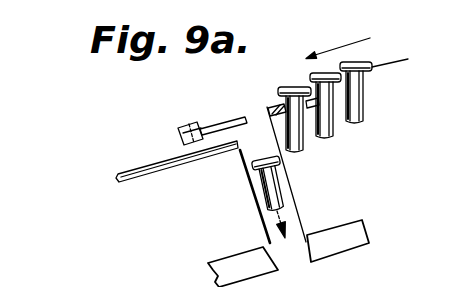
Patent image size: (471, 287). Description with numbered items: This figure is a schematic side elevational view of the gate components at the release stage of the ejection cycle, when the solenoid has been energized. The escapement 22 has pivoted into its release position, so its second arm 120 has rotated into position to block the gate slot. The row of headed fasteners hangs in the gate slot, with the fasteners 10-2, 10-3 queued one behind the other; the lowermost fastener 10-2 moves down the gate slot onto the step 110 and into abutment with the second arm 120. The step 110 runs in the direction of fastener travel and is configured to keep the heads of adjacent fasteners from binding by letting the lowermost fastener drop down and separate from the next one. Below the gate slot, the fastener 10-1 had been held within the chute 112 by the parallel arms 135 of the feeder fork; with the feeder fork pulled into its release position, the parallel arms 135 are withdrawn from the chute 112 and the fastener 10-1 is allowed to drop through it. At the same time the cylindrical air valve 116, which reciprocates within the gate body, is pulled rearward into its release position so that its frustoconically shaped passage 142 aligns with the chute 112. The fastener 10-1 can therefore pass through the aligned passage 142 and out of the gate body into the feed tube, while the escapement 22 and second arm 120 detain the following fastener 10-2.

The escapement 22 is at (184, 126).
The second arm 120 is at (268, 105).
The step 110 is at (262, 93).
The fastener 10-2 is at (285, 87).
The fastener 10-3 is at (338, 136).
The fastener 10-1 is at (283, 170).
The parallel arms 135 is at (158, 170).
The chute 112 is at (292, 209).
The air valve 116 is at (367, 232).
The passage 142 is at (292, 262).